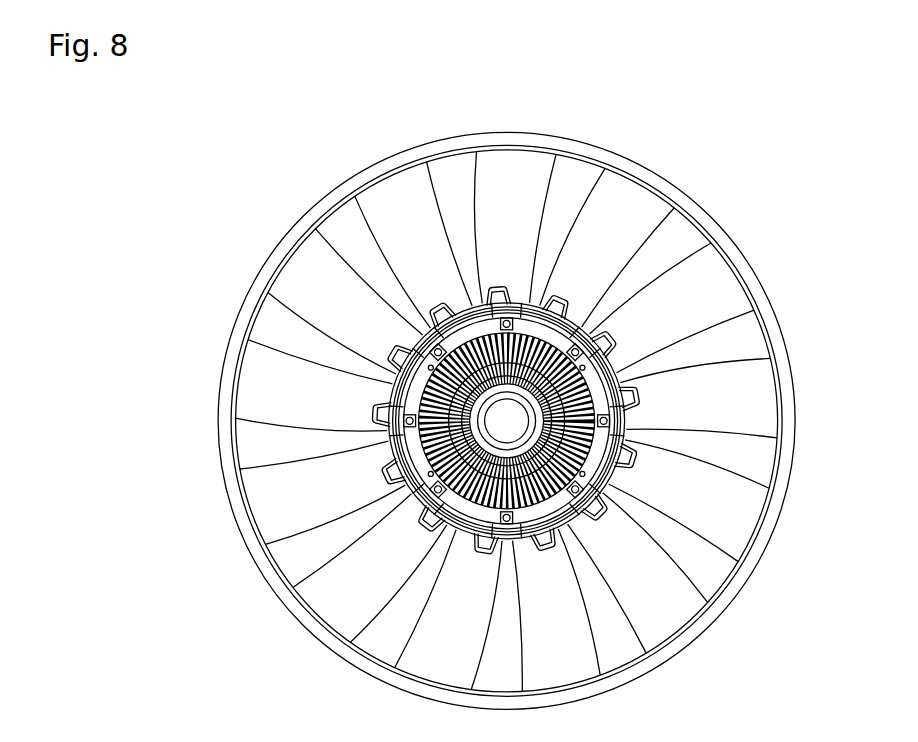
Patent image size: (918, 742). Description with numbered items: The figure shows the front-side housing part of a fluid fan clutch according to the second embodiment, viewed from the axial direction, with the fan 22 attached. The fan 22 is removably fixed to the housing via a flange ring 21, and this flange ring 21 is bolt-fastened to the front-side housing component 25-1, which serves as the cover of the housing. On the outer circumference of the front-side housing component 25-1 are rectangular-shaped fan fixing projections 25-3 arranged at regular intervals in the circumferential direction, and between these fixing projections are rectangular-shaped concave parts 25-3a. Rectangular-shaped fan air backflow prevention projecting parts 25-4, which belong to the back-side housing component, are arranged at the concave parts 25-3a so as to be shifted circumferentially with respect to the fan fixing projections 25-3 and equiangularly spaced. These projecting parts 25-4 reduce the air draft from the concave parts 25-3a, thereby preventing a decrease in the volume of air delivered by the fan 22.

The flange ring 21 is at (507, 285).
The fan 22 is at (506, 407).
The front-side housing component 25-1 is at (507, 296).
The fan fixing projections 25-3 is at (426, 357).
The concave parts 25-3a is at (257, 360).
The fan air backflow prevention projecting parts 25-4 is at (517, 300).